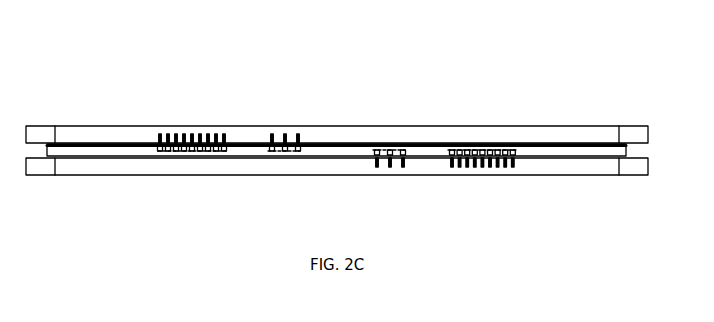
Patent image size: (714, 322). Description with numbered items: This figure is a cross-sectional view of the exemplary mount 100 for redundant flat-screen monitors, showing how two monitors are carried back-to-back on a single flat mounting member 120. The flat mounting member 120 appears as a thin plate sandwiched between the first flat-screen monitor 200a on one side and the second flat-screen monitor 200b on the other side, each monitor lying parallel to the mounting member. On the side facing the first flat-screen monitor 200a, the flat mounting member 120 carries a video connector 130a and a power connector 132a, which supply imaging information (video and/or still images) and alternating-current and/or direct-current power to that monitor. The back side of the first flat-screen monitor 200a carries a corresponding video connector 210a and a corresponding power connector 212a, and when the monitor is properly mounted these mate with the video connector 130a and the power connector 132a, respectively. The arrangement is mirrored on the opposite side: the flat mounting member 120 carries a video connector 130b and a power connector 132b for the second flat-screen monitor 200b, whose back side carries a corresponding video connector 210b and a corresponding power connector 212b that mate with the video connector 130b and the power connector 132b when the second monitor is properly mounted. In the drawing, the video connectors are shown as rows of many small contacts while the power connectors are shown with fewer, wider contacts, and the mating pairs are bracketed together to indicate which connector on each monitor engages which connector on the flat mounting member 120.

The mount 100 is at (344, 62).
The flat mounting member 120 is at (117, 150).
The first flat-screen monitor 200a is at (568, 182).
The second flat-screen monitor 200b is at (568, 120).
The video connector 210a is at (517, 175).
The video connector 210b is at (227, 126).
The power connector 212a is at (405, 175).
The power connector 212b is at (300, 126).
The video connector 130a is at (517, 143).
The video connector 130b is at (227, 158).
The power connector 132a is at (405, 143).
The power connector 132b is at (300, 158).